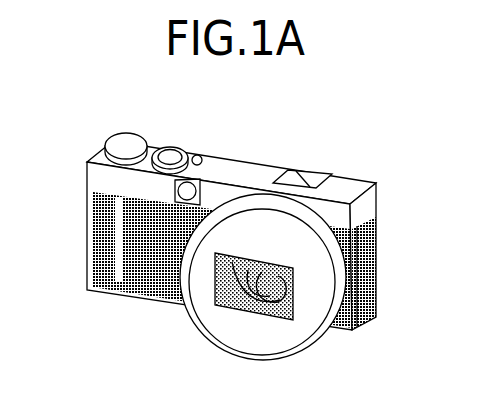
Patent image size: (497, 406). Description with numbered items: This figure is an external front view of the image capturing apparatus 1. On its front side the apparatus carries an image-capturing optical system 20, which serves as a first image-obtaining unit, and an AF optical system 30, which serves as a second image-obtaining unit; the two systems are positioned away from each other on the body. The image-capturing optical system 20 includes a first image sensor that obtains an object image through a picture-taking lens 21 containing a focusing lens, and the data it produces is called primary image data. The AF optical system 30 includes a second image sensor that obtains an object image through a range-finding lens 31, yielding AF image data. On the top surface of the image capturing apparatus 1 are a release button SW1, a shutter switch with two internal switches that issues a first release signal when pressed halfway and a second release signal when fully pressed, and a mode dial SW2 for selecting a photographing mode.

The image capturing apparatus 1 is at (269, 234).
The image-capturing optical system 20 is at (292, 350).
The picture-taking lens 21 is at (220, 288).
The AF optical system 30 is at (240, 168).
The range-finding lens 31 is at (190, 183).
The release button SW1 is at (175, 147).
The mode dial SW2 is at (125, 138).